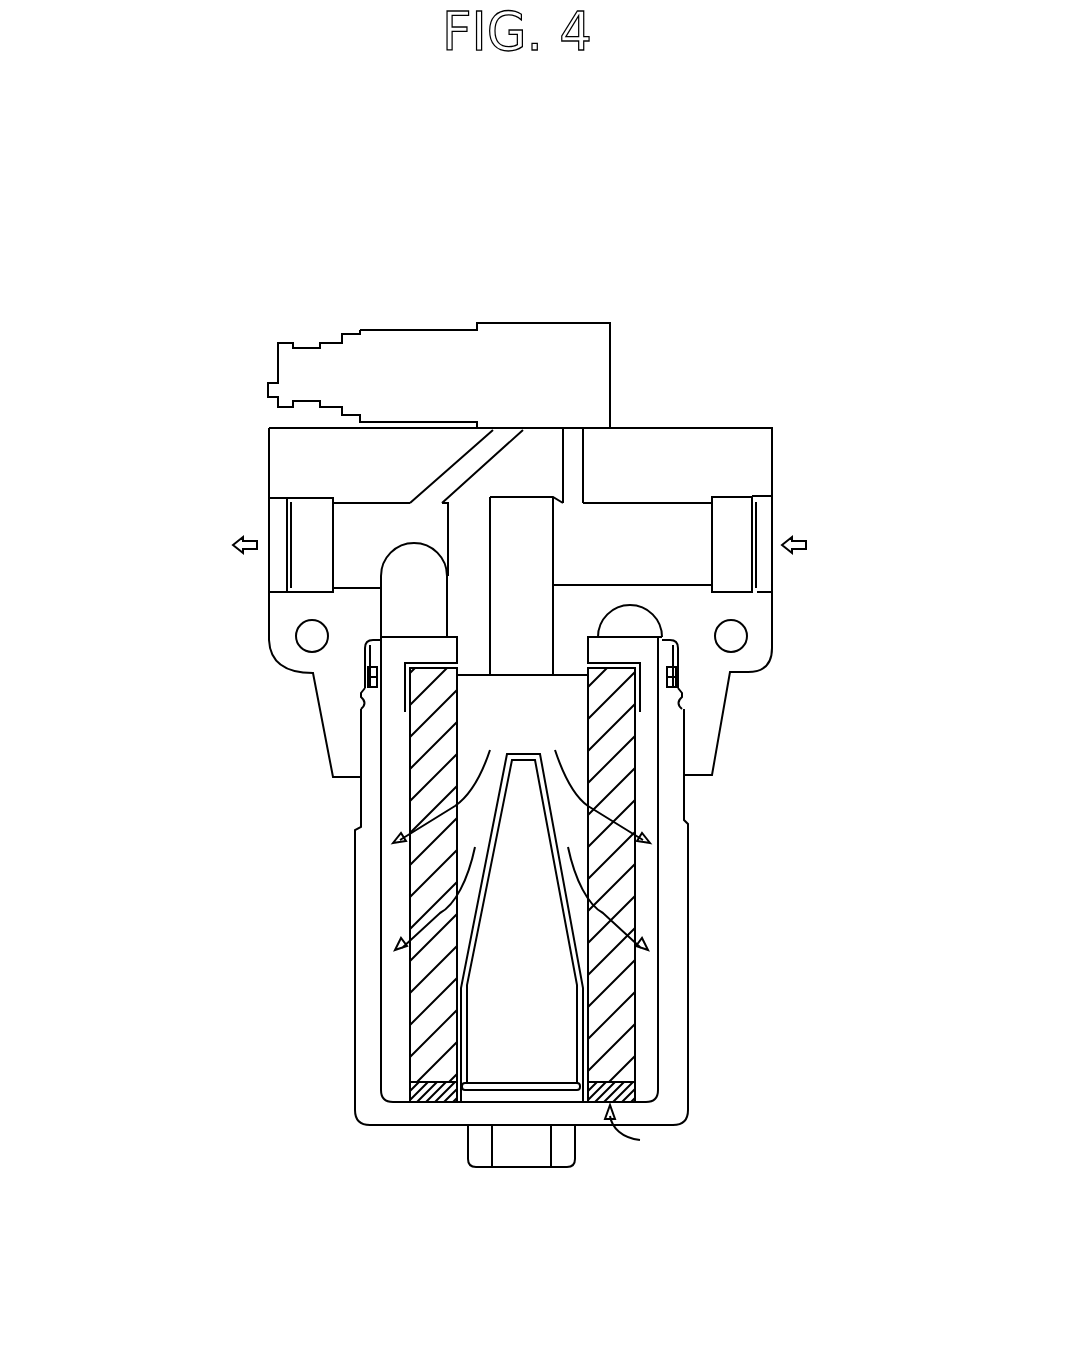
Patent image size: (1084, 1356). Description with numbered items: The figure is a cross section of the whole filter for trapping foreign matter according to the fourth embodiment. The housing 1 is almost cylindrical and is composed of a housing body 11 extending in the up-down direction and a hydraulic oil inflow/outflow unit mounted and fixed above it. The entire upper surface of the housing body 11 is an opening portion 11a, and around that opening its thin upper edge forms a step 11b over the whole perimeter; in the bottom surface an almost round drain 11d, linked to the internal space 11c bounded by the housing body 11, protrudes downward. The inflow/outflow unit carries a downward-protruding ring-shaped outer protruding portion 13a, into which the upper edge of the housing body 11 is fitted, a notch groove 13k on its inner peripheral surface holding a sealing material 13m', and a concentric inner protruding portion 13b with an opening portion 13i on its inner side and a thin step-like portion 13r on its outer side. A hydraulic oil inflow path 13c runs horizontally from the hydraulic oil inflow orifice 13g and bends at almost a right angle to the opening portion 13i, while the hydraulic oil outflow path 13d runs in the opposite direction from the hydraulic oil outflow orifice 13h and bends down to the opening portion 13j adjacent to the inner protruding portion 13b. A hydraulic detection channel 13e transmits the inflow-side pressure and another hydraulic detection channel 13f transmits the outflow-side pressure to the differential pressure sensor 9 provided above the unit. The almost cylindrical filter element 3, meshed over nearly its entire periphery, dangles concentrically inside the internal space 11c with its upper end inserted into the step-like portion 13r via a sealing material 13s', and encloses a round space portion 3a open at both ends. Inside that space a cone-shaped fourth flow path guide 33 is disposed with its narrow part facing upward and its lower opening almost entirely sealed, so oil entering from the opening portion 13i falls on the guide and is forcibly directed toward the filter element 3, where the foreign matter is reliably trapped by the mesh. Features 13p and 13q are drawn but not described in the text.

The housing 1 is at (742, 851).
The filter element 3 is at (417, 1026).
The round space portion 3a is at (539, 734).
The differential pressure sensor 9 is at (443, 327).
The housing body 11 is at (690, 920).
The opening portion 11a is at (657, 628).
The step 11b is at (670, 710).
The internal space 11c is at (650, 1035).
The drain 11d is at (518, 1153).
The outer protruding portion 13a is at (700, 758).
The inner protruding portion 13b is at (487, 647).
The hydraulic oil inflow path 13c is at (675, 518).
The hydraulic oil outflow path 13d is at (360, 536).
The hydraulic detection channel 13e is at (585, 473).
The hydraulic detection channel 13f is at (433, 486).
The hydraulic oil inflow orifice 13g is at (765, 521).
The hydraulic oil outflow orifice 13h is at (277, 513).
The opening portion 13i is at (527, 670).
The opening portion 13j is at (407, 635).
The notch groove 13k is at (363, 689).
The sealing material 13m' is at (397, 713).
The left mounting hole 13p is at (312, 634).
The right mounting hole 13q is at (740, 641).
The step-like portion 13r is at (457, 728).
The sealing material 13s' is at (390, 674).
The fourth flow path guide 33 is at (480, 882).